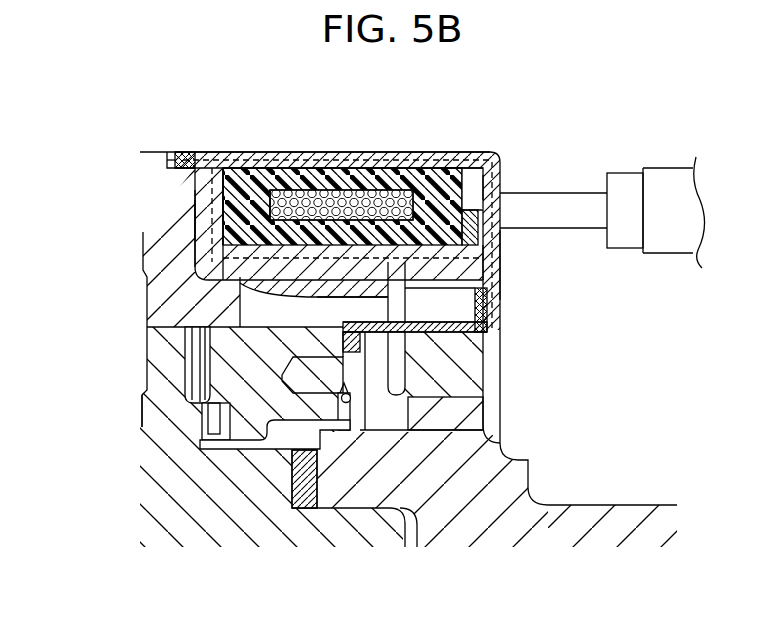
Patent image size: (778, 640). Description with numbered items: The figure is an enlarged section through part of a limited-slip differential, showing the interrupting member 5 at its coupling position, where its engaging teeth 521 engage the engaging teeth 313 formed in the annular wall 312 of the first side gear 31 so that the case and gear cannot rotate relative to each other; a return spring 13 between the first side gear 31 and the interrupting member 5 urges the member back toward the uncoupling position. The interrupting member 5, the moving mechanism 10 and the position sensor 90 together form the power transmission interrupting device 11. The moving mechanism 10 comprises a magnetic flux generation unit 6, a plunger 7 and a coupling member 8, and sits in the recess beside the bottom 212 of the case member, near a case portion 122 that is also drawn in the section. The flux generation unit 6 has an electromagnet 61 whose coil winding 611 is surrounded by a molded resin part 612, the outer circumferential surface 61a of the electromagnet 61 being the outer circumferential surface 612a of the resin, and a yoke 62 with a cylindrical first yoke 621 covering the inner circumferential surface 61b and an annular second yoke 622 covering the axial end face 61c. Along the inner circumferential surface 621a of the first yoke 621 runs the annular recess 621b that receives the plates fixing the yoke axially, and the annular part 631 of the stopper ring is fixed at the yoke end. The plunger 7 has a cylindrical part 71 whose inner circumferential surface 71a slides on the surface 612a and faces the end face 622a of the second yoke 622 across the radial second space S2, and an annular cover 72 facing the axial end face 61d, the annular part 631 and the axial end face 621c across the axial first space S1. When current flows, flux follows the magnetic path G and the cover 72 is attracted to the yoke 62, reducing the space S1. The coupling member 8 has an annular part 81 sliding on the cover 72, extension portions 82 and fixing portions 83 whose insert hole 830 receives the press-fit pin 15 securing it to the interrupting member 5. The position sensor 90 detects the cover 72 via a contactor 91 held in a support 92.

The interrupting member 5 is at (253, 413).
The magnetic flux generation unit 6 is at (191, 291).
The plunger 7 is at (342, 152).
The coupling member 8 is at (576, 308).
The moving mechanism 10 is at (528, 132).
The power transmission interrupting device 11 is at (375, 416).
The return spring 13 is at (200, 435).
The press-fit pin 15 is at (366, 363).
The first side gear 31 is at (180, 487).
The electromagnet 61 is at (373, 100).
The outer circumferential surface 61a is at (267, 152).
The inner circumferential surface 61b is at (195, 253).
The axial end face 61c is at (463, 188).
The axial end face 61d is at (208, 199).
The yoke 62 is at (216, 193).
The cylindrical part 71 is at (313, 167).
The inner circumferential surface 71a is at (297, 177).
The annular cover 72 is at (493, 262).
The annular part 81 is at (502, 305).
The extension portion 82 is at (352, 336).
The fixing portion 83 is at (405, 345).
The position sensor 90 is at (675, 271).
The contactor 91 is at (585, 193).
The support 92 is at (657, 167).
The fixing portion 122 is at (301, 452).
The bottom 212 is at (477, 475).
The annular wall 312 is at (160, 388).
The engaging teeth 313 is at (193, 348).
The engaging teeth 521 is at (213, 417).
The coil winding 611 is at (353, 190).
The molded resin part 612 is at (400, 165).
The outer circumferential surface 612a is at (447, 167).
The first yoke 621 is at (303, 272).
The inner circumferential surface 621a is at (353, 277).
The annular recess 621b is at (395, 287).
The axial end face 621c is at (487, 282).
The second yoke 622 is at (200, 215).
The end face 622a is at (187, 163).
The annular part 631 is at (478, 212).
The insert hole 830 is at (338, 420).
The magnetic path G is at (483, 159).
The first space S1 is at (483, 285).
The second space S2 is at (195, 168).